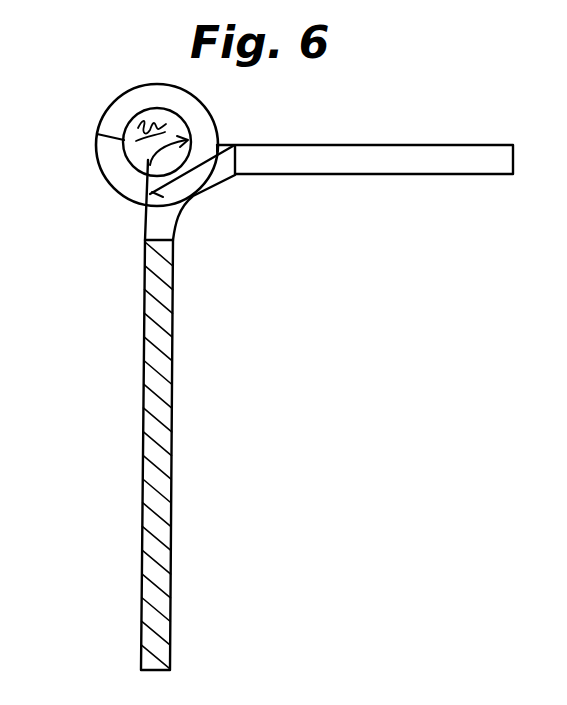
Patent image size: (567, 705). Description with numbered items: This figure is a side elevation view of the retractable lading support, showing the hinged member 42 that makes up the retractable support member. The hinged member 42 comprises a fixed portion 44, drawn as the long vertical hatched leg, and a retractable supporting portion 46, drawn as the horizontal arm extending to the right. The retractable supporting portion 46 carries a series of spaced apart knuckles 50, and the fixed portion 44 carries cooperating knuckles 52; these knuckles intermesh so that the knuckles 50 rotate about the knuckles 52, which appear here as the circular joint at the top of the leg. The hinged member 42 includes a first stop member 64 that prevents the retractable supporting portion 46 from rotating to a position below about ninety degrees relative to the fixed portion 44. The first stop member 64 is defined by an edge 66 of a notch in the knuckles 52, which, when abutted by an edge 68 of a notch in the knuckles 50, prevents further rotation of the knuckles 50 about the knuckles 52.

The hinged member 42 is at (293, 301).
The fixed portion 44 is at (155, 424).
The retractable supporting portion 46 is at (375, 160).
The knuckles 50 is at (151, 100).
The knuckles 52 is at (210, 158).
The first stop member 64 is at (141, 198).
The edge 66 is at (197, 140).
The edge 68 is at (220, 143).